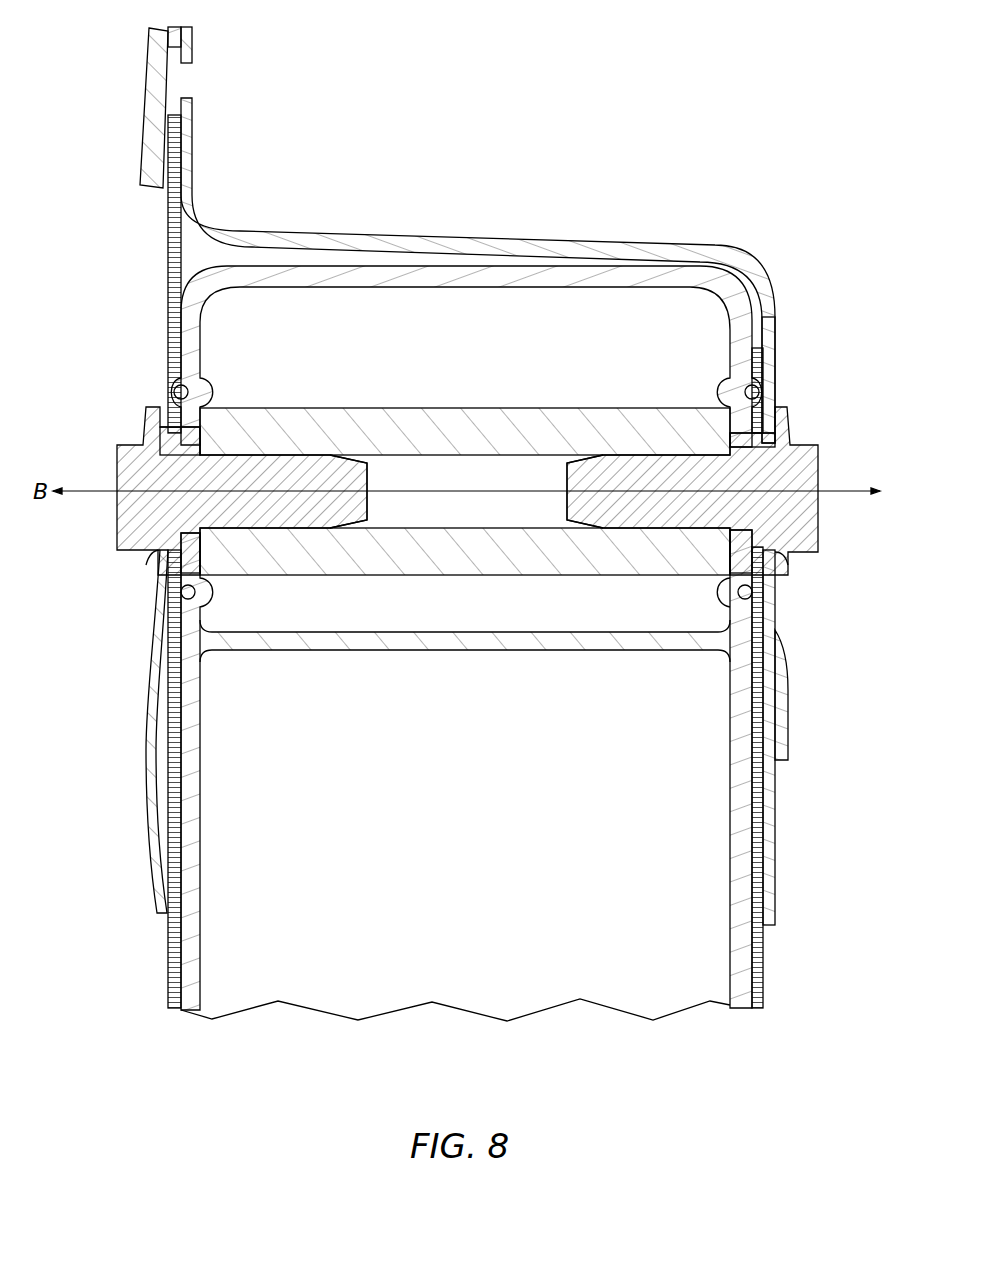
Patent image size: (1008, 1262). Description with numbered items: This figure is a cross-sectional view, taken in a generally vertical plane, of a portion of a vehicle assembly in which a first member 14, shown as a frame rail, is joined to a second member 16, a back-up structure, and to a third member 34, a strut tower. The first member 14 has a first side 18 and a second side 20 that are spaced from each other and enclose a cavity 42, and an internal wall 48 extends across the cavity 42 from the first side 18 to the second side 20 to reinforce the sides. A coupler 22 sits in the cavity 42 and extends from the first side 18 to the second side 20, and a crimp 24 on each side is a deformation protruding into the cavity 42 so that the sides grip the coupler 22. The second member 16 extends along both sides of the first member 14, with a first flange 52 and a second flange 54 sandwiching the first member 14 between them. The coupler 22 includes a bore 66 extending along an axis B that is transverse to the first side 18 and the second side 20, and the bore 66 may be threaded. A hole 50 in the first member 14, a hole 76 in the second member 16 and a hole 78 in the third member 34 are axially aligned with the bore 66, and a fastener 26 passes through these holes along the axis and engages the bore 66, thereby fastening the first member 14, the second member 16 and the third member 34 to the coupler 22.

The first member 14 is at (360, 265).
The second member 16 is at (478, 242).
The first side 18 is at (190, 347).
The second side 20 is at (745, 362).
The coupler 22 is at (420, 405).
The crimp 24 is at (180, 392).
The fastener 26 is at (117, 462).
The third member 34 is at (152, 825).
The cavity 42 is at (690, 797).
The internal wall 48 is at (490, 655).
The hole 50 is at (215, 522).
The first flange 52 is at (170, 235).
The second flange 54 is at (776, 307).
The bore 66 is at (490, 510).
The hole 76 is at (163, 550).
The hole 78 is at (168, 548).